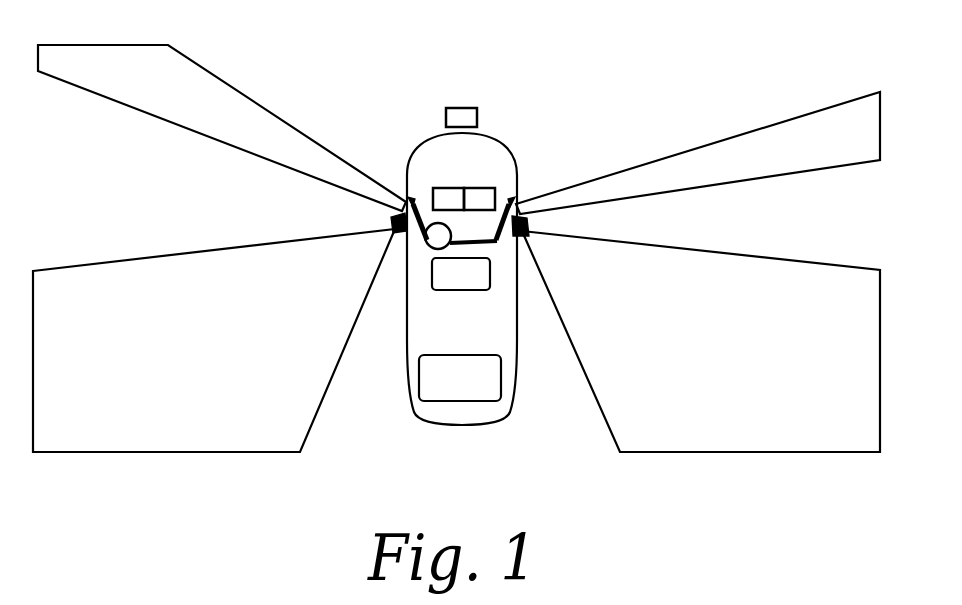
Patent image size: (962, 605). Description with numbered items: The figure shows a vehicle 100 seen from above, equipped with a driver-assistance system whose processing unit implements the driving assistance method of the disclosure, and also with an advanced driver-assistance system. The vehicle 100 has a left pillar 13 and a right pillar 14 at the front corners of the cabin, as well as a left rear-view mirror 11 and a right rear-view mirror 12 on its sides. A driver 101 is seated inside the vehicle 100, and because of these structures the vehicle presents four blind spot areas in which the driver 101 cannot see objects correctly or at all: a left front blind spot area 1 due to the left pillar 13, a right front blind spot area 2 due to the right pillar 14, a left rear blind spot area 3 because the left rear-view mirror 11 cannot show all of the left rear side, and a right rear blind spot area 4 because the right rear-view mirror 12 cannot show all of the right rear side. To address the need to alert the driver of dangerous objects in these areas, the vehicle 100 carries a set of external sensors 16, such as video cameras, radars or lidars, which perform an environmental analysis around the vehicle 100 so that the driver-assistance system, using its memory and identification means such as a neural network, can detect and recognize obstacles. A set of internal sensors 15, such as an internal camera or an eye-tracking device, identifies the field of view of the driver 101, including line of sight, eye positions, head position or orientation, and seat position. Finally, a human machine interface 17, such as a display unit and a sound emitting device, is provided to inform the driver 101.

The left front blind spot area 1 is at (224, 74).
The right front blind spot area 2 is at (705, 130).
The left rear blind spot area 3 is at (186, 253).
The right rear blind spot area 4 is at (742, 282).
The left rear-view mirror 11 is at (398, 218).
The right rear-view mirror 12 is at (536, 212).
The left pillar 13 is at (411, 199).
The right pillar 14 is at (512, 200).
The set of internal sensors 15 is at (464, 187).
The set of external sensors 16 is at (465, 107).
The human machine interface 17 is at (486, 189).
The vehicle 100 is at (484, 412).
The driver 101 is at (426, 246).